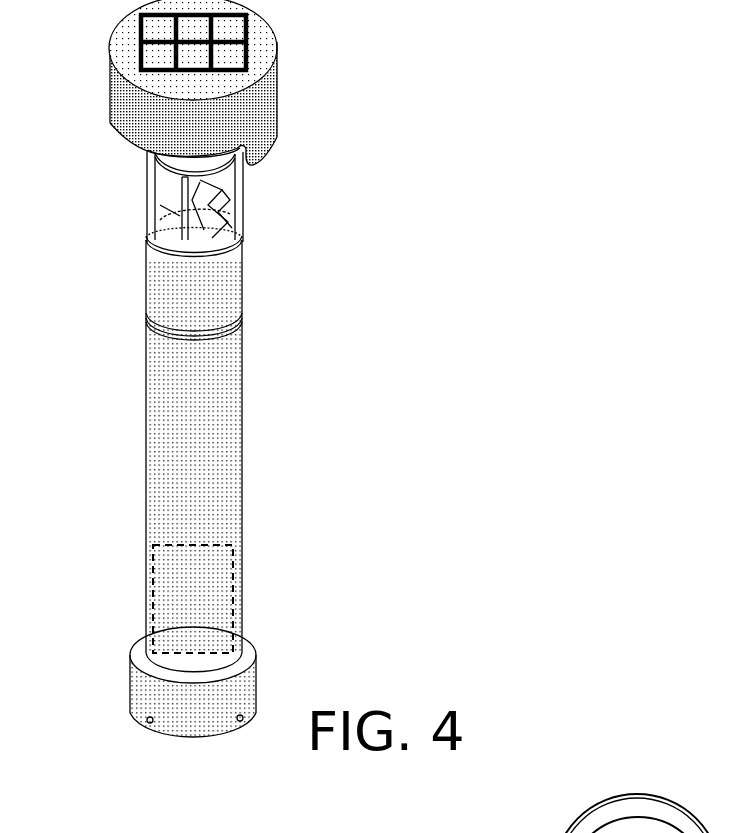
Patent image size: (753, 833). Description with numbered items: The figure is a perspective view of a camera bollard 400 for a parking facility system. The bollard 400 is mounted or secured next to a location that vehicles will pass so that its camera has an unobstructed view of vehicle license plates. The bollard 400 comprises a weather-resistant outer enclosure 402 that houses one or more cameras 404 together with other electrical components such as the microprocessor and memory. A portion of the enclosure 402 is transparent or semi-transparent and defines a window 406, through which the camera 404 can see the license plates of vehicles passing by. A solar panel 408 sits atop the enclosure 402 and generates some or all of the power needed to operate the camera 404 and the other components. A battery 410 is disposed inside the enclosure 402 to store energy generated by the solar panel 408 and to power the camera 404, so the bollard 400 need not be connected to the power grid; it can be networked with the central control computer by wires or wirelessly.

The bollard 400 is at (284, 368).
The outer enclosure 402 is at (207, 525).
The camera 404 is at (225, 190).
The window 406 is at (158, 210).
The solar panel 408 is at (247, 35).
The battery 410 is at (233, 600).